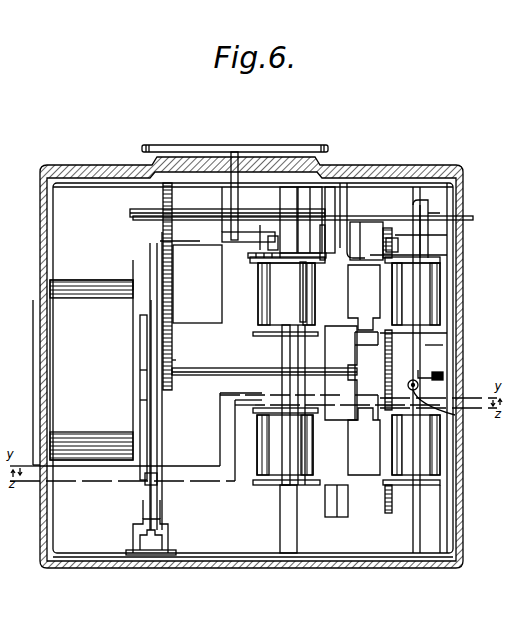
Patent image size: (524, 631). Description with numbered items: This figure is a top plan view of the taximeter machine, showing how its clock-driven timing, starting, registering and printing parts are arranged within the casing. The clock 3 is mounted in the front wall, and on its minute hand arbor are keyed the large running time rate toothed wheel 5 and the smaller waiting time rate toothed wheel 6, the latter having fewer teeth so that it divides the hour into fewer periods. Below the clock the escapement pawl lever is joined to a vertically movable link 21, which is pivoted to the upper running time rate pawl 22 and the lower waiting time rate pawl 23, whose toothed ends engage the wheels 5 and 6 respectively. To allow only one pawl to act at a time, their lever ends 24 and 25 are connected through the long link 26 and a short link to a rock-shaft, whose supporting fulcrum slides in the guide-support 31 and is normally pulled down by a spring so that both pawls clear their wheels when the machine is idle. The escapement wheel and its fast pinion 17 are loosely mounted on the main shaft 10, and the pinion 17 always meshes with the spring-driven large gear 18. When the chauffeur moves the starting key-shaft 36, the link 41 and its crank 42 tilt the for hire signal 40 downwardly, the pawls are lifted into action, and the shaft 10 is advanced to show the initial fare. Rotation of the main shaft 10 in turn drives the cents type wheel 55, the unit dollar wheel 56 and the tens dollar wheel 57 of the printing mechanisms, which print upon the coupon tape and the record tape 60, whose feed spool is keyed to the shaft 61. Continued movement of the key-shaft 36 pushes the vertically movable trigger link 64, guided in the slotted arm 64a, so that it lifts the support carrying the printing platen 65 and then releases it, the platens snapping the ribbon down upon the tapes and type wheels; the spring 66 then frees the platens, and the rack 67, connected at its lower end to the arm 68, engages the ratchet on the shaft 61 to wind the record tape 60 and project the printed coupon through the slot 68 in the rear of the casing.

The clock 3 is at (91, 370).
The running time rate toothed wheel 5 is at (142, 300).
The waiting time rate toothed wheel 6 is at (173, 342).
The main shaft 10 is at (243, 370).
The pinion 17 is at (174, 359).
The large gear 18 is at (191, 282).
The vertically movable link 21 is at (158, 478).
The running time rate pawl 22 is at (147, 437).
The waiting time rate pawl 23 is at (158, 445).
The lever end 24 is at (143, 520).
The lever end 25 is at (161, 522).
The long link 26 is at (168, 528).
The guide-support 31 is at (170, 548).
The starting key-shaft 36 is at (198, 218).
The for hire signal 40 is at (276, 146).
The link 41 is at (268, 258).
The crank 42 is at (246, 232).
The cents type wheel 55 is at (420, 258).
The unit dollar wheel 56 is at (430, 226).
The tens dollar wheel 57 is at (445, 333).
The record tape 60 is at (345, 371).
The shaft 61 is at (258, 396).
The vertically movable link 64 is at (420, 383).
The slotted arm 64a is at (455, 416).
The printing platen 65 is at (372, 292).
The spring 66 is at (433, 362).
The rack 67 is at (325, 262).
The arm 68 is at (360, 232).